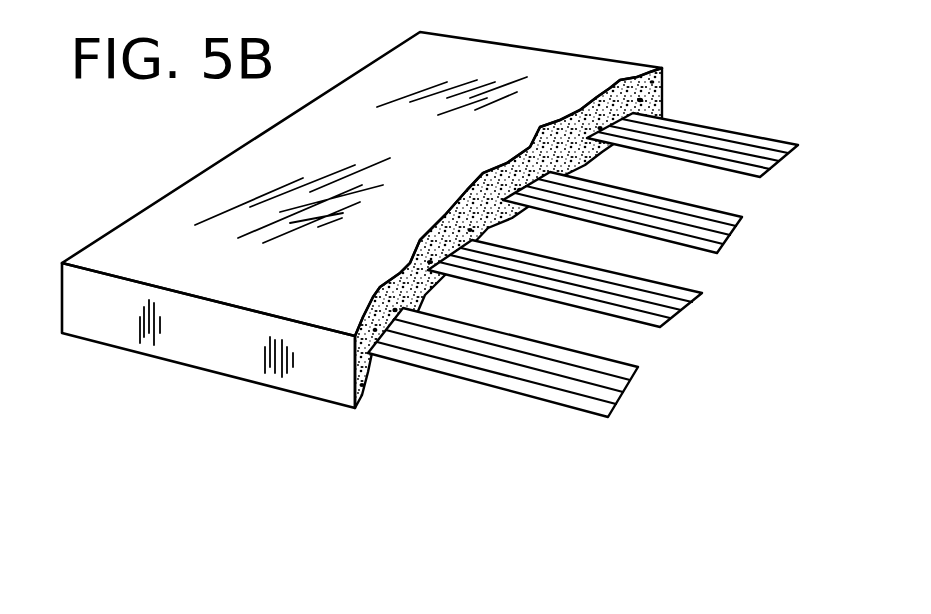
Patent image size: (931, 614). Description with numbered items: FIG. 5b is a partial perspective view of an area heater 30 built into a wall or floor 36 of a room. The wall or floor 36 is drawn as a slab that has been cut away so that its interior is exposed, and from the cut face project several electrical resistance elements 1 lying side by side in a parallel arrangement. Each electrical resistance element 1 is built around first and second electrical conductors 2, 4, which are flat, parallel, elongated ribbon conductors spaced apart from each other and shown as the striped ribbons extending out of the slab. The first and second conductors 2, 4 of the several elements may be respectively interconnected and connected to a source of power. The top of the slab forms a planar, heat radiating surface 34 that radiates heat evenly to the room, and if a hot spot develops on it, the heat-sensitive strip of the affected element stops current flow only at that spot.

The electrical resistance element 1 is at (784, 161).
The first electrical conductor 2 is at (587, 408).
The second electrical conductor 4 is at (615, 365).
The area heater 30 is at (457, 394).
The planar heat radiating surface 34 is at (591, 68).
The wall or floor 36 is at (62, 300).